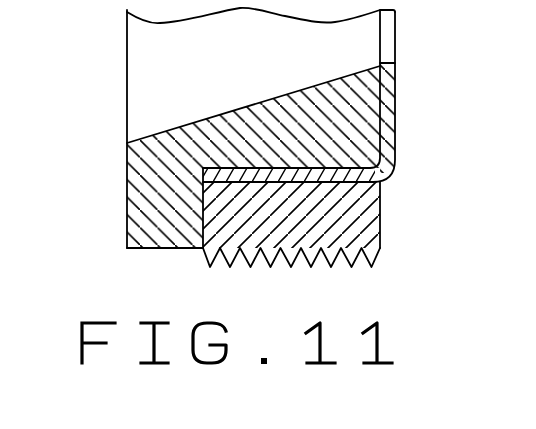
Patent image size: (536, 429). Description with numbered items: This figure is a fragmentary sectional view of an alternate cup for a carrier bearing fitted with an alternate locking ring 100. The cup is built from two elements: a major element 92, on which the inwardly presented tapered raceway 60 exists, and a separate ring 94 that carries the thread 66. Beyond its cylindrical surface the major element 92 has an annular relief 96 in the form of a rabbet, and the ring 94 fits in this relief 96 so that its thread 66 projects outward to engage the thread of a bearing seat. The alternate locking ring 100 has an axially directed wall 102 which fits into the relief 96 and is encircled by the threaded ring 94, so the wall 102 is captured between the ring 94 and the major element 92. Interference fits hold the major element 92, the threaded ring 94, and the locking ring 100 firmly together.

The tapered raceway 60 is at (223, 112).
The major element 92 is at (157, 173).
The alternate locking ring 100 is at (395, 112).
The annular relief 96 is at (330, 176).
The ring 94 is at (357, 225).
The thread 66 is at (332, 258).
The axially directed wall 102 is at (267, 183).